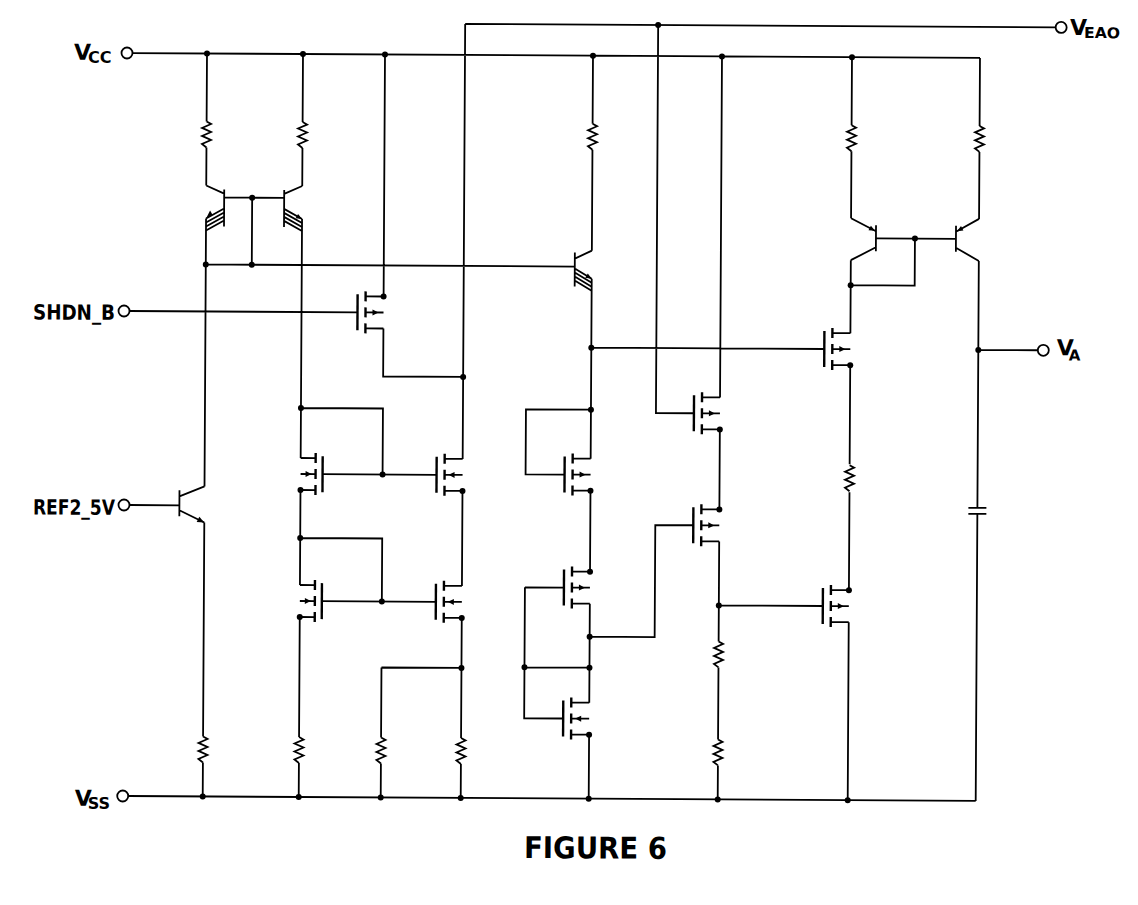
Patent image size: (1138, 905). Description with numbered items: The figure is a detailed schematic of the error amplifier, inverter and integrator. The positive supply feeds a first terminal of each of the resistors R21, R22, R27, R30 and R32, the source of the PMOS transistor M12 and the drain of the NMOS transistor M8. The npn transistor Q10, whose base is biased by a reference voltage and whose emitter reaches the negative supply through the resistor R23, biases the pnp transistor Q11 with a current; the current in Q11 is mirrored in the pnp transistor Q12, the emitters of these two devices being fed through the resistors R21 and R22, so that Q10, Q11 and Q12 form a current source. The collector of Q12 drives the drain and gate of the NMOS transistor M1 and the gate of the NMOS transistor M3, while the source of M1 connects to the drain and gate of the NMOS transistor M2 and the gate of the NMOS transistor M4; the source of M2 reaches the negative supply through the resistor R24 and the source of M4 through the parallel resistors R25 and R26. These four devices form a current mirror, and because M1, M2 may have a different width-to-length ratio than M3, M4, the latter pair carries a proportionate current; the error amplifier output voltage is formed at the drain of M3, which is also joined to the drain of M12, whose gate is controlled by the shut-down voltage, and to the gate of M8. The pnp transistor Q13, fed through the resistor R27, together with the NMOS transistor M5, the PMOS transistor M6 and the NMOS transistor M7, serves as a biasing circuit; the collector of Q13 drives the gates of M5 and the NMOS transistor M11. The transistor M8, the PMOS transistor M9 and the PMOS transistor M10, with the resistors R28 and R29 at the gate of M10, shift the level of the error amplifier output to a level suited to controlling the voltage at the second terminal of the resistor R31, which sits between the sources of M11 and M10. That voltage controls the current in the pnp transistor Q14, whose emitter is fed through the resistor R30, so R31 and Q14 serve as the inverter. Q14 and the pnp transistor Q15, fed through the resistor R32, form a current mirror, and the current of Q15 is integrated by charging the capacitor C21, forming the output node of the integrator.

The resistor R21 is at (187, 134).
The resistor R22 is at (323, 135).
The resistor R23 is at (224, 749).
The resistor R24 is at (319, 750).
The resistor R25 is at (400, 750).
The resistor R26 is at (481, 751).
The resistor R27 is at (615, 137).
The resistor R28 is at (740, 654).
The resistor R29 is at (740, 752).
The resistor R30 is at (829, 138).
The resistor R31 is at (827, 478).
The resistor R32 is at (957, 139).
The npn bipolar transistor Q10 is at (178, 494).
The pnp bipolar transistor Q11 is at (207, 208).
The pnp bipolar transistor Q12 is at (299, 209).
The pnp bipolar transistor Q13 is at (607, 271).
The pnp bipolar transistor Q14 is at (878, 227).
The pnp bipolar transistor Q15 is at (956, 226).
The NMOS transistor M1 is at (290, 474).
The NMOS transistor M2 is at (287, 601).
The NMOS transistor M3 is at (437, 462).
The NMOS transistor M4 is at (438, 591).
The NMOS transistor M5 is at (598, 475).
The PMOS transistor M6 is at (601, 588).
The NMOS transistor M7 is at (601, 719).
The NMOS transistor M8 is at (730, 413).
The PMOS transistor M9 is at (730, 525).
The PMOS transistor M10 is at (867, 606).
The NMOS transistor M11 is at (864, 349).
The PMOS transistor M12 is at (399, 312).
The capacitor C21 is at (958, 513).